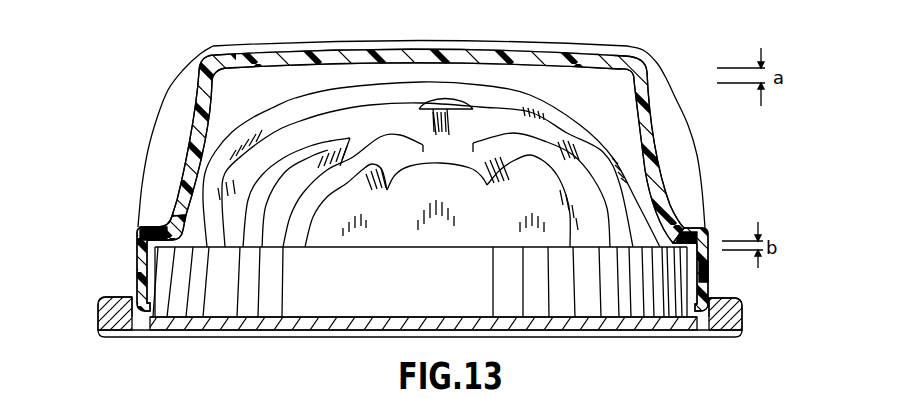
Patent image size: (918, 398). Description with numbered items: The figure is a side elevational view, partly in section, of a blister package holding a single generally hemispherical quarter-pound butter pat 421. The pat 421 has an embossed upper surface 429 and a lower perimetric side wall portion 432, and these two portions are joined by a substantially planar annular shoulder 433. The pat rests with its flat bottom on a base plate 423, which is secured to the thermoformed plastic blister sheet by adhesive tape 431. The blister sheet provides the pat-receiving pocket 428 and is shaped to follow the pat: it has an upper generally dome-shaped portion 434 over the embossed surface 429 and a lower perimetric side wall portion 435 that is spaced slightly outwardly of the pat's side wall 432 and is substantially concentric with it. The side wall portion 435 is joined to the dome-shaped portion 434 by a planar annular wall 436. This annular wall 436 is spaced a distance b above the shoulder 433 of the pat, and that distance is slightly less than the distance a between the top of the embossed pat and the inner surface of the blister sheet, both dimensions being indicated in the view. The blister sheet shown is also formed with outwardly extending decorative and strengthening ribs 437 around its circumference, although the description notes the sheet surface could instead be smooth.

The butter pat 421 is at (329, 98).
The base plate 423 is at (307, 338).
The pat-receiving pocket 428 is at (240, 95).
The embossed upper surface 429 is at (433, 90).
The adhesive tape 431 is at (115, 300).
The side wall portion 432 is at (137, 251).
The annular shoulder 433 is at (682, 242).
The dome-shaped portion 434 is at (168, 137).
The side wall portion 435 is at (709, 276).
The annular wall 436 is at (138, 225).
The ribs 437 is at (677, 143).